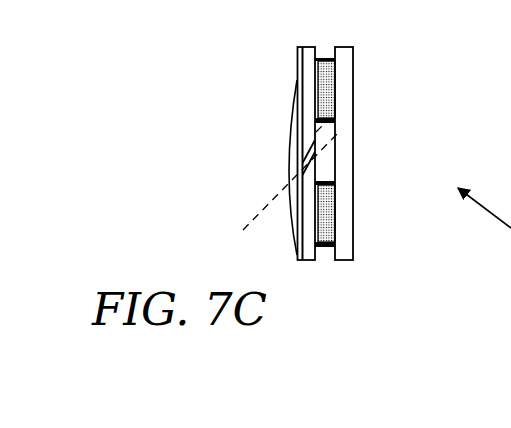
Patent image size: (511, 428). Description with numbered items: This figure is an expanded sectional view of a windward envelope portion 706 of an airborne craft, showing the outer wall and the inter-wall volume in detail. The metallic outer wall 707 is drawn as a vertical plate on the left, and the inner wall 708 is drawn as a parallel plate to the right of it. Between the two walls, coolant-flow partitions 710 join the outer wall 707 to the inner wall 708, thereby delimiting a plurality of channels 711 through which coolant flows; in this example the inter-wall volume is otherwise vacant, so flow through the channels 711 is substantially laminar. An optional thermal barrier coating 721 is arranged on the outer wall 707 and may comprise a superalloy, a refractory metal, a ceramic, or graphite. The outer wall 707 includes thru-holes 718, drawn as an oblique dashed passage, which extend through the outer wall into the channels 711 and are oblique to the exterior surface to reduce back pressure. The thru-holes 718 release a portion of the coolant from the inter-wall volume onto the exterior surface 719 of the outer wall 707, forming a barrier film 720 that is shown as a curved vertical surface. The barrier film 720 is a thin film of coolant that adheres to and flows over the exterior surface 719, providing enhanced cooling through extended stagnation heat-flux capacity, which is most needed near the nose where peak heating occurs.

The windward envelope portion 706 is at (510, 263).
The outer wall 707 is at (308, 42).
The inner wall 708 is at (345, 42).
The coolant-flow partitions 710 is at (328, 96).
The channels 711 is at (322, 173).
The thru-holes 718 is at (283, 183).
The exterior surface 719 is at (291, 82).
The barrier film 720 is at (289, 145).
The thermal barrier coating 721 is at (298, 70).